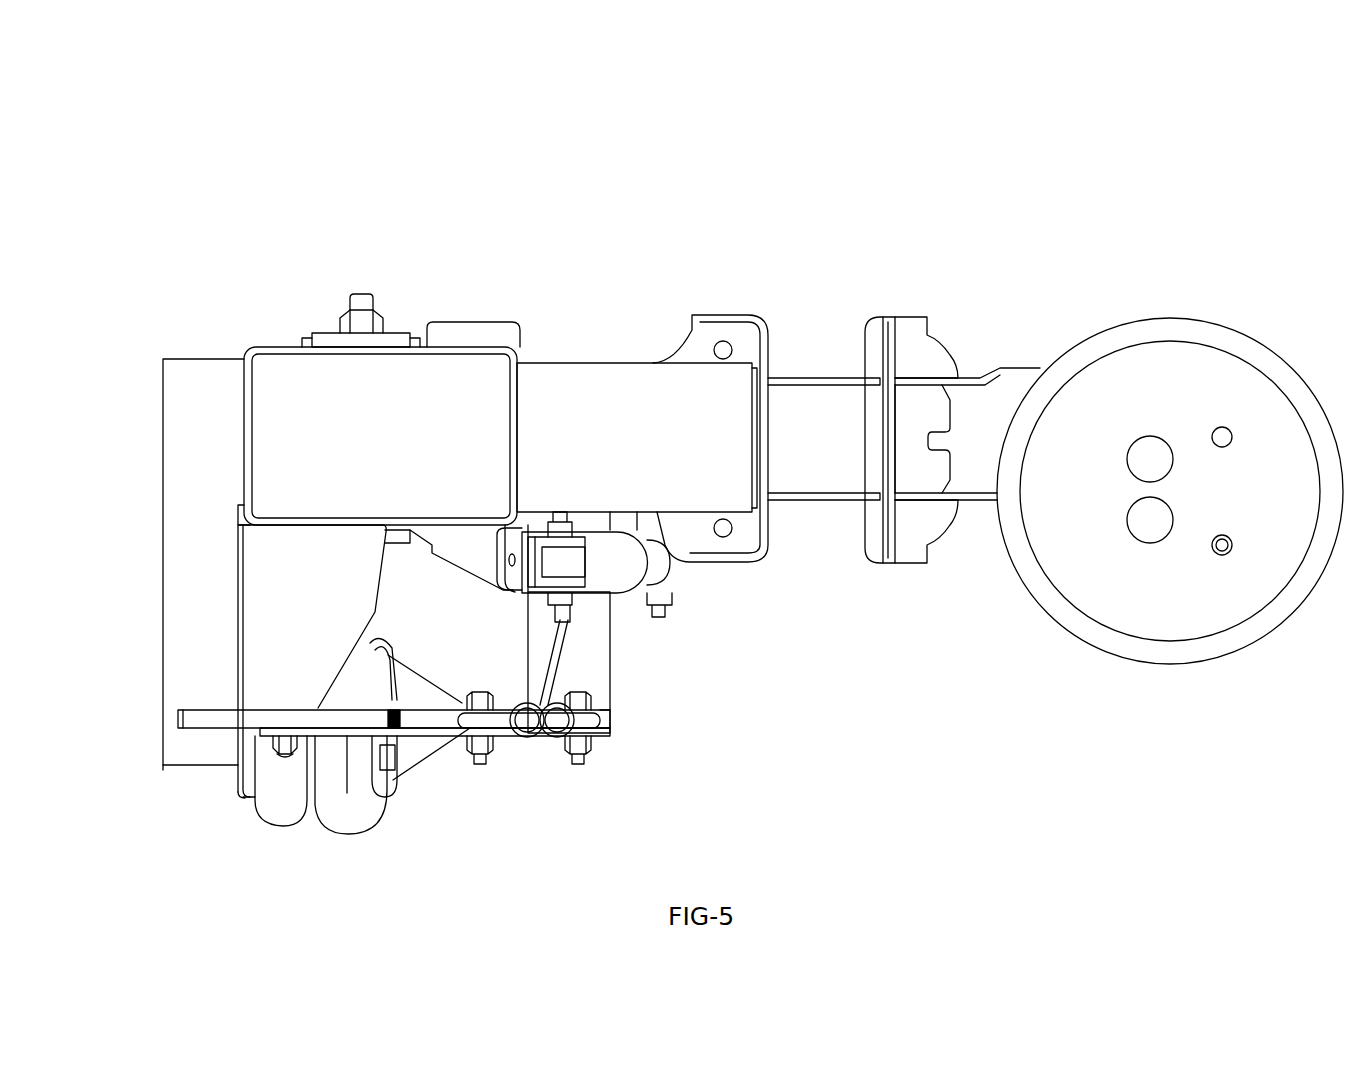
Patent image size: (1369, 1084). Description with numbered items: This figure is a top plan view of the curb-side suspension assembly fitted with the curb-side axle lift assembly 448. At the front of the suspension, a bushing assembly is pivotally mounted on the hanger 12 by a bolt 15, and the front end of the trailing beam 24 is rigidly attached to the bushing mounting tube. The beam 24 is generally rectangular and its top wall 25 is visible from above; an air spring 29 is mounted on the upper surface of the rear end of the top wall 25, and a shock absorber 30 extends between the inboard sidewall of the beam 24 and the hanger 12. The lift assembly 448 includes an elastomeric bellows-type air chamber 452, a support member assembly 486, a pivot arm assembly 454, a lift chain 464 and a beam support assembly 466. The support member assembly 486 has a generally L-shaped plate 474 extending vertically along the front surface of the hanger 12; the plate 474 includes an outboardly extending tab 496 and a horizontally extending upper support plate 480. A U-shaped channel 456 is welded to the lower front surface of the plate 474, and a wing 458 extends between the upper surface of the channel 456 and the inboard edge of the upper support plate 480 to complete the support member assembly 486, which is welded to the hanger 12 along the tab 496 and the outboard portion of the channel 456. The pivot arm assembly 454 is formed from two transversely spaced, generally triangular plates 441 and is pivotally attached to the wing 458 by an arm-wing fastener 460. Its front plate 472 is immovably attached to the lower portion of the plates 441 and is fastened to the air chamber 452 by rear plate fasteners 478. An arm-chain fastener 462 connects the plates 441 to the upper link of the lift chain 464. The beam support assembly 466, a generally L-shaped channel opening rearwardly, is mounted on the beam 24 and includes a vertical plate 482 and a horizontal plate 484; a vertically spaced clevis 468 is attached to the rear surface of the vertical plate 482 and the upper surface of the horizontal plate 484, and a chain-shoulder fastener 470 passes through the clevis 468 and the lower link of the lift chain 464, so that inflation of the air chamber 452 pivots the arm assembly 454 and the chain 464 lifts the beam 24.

The curb-side axle lift assembly 448 is at (205, 228).
The U-shaped channel 456 is at (192, 358).
The hanger 12 is at (277, 345).
The bolt 15 is at (367, 293).
The beam 24 is at (595, 357).
The top wall 25 is at (650, 454).
The air spring 29 is at (1097, 648).
The shock absorber 30 is at (628, 575).
The tab 496 is at (240, 505).
The upper support plate 480 is at (330, 617).
The rear plate fasteners 478 is at (397, 722).
The vertical plate 482 is at (545, 650).
The plates 441 is at (437, 702).
The beam support assembly 466 is at (618, 650).
The horizontal plate 484 is at (613, 672).
The wing 458 is at (190, 706).
The clevis 468 is at (612, 730).
The lift chain 464 is at (522, 746).
The arm-chain fastener 462 is at (476, 762).
The chain-shoulder fastener 470 is at (578, 766).
The pivot arm assembly 454 is at (425, 714).
The support member assembly 486 is at (170, 775).
The L-shaped plate 474 is at (240, 797).
The arm-wing fastener 460 is at (287, 757).
The air chamber 452 is at (268, 822).
The front plate 472 is at (398, 777).